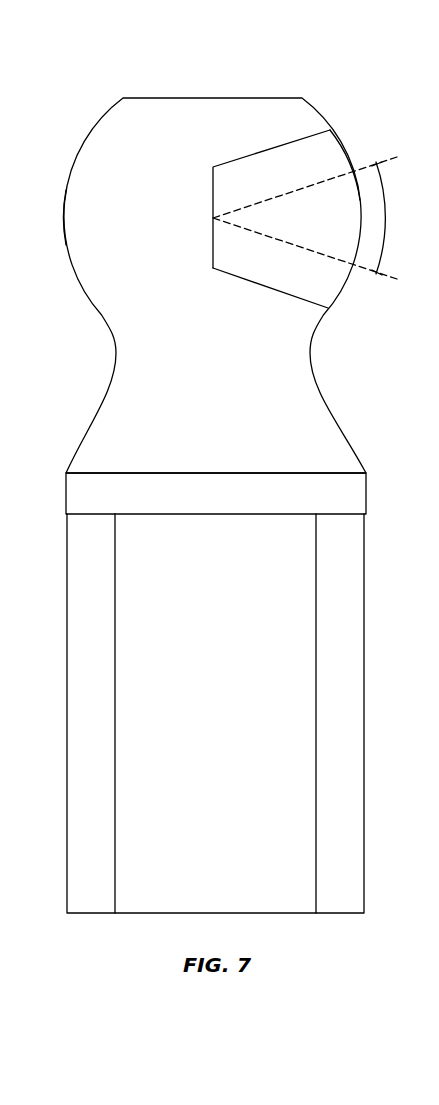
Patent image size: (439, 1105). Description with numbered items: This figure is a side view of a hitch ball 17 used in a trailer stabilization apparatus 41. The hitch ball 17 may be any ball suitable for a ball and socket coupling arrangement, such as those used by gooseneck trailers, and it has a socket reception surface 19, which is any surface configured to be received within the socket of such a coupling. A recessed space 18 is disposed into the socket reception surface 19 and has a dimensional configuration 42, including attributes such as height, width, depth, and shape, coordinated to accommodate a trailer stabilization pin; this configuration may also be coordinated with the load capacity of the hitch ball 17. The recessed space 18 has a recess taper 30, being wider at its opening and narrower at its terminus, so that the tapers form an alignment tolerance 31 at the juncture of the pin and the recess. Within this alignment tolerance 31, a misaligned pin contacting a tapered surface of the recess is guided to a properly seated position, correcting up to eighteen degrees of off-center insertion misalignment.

The trailer stabilization apparatus 41 is at (143, 56).
The hitch ball 17 is at (105, 143).
The socket reception surface 19 is at (68, 177).
The recess taper 30 is at (278, 143).
The recessed space 18 is at (328, 153).
The alignment tolerance 31 is at (387, 220).
The dimensional configuration 42 is at (302, 282).